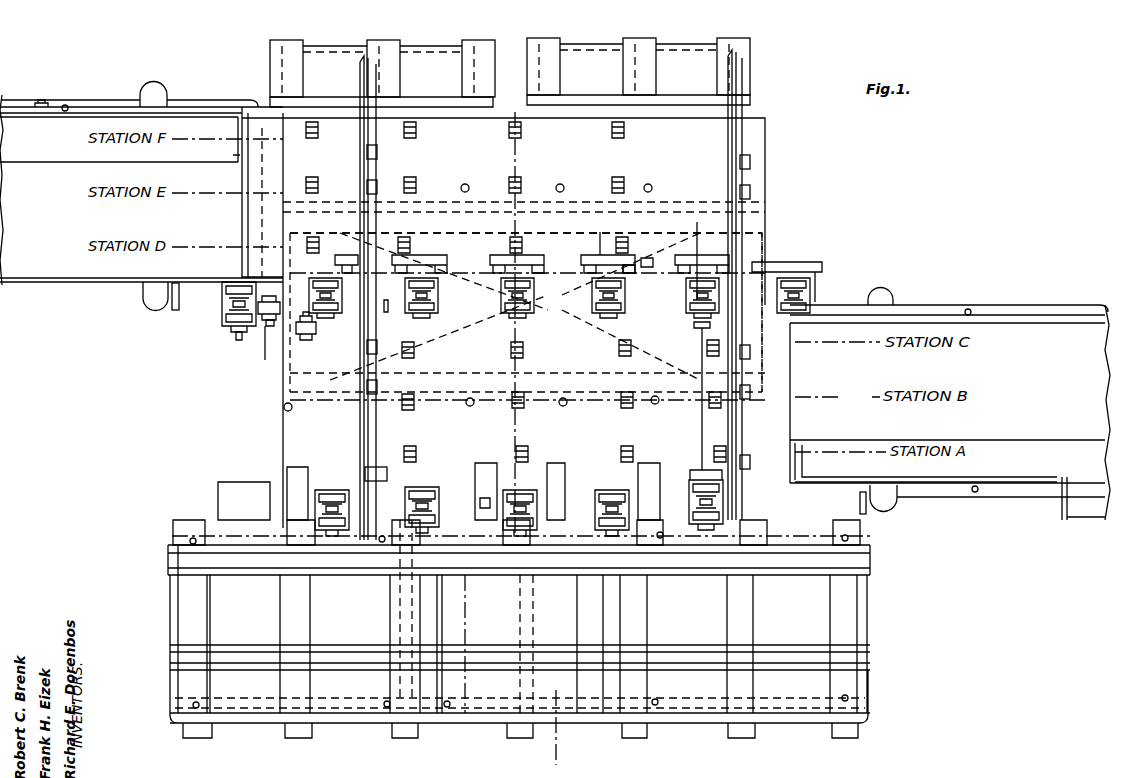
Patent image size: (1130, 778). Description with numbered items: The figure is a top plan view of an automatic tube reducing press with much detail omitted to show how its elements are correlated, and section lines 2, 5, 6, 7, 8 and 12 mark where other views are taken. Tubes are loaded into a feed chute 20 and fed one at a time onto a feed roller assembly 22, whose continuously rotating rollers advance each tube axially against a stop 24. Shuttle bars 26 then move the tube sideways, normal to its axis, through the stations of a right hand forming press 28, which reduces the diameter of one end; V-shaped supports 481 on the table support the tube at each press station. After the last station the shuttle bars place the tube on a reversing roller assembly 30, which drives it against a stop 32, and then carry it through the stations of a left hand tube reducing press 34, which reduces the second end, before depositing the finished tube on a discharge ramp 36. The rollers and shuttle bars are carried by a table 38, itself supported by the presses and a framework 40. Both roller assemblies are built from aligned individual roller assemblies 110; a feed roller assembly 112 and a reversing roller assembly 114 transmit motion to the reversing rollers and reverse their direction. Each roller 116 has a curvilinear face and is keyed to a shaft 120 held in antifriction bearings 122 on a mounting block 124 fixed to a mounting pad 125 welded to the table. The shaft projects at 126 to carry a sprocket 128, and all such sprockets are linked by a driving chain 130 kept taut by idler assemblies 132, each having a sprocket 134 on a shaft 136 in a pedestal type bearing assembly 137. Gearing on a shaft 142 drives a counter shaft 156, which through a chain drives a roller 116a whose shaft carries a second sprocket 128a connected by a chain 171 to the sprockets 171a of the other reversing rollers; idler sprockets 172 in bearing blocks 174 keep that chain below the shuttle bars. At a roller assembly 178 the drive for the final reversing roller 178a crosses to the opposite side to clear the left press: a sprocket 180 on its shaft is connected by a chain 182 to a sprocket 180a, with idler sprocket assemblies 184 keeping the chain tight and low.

The section line 2- 2 is at (560, 480).
The section line 5- 5 is at (700, 232).
The section line 6- 6 is at (847, 380).
The section line 7- 7 is at (387, 276).
The section line 8- 8 is at (380, 350).
The section line 12- 12 is at (512, 140).
The feed chute 20 is at (686, 732).
The feed roller assembly 22 is at (433, 488).
The stop 24 is at (866, 514).
The shuttle bars 26 is at (359, 151).
The right hand forming press 28 is at (1010, 304).
The reversing roller assembly 30 is at (402, 301).
The stop 32 is at (175, 312).
The left hand tube reducing press 34 is at (99, 296).
The discharge ramp 36 is at (750, 60).
The table 38 is at (697, 165).
The framework 40 is at (760, 218).
The roller assembly 110 is at (528, 308).
The feed roller assembly 112 is at (688, 484).
The reversing roller assembly 114 is at (684, 300).
The roller 116 is at (436, 500).
The roller 116a is at (502, 302).
The shaft 120 is at (310, 288).
The antifriction bearings 122 is at (532, 492).
The mounting block 124 is at (446, 494).
The mounting pad 125 is at (546, 502).
The projecting shaft end 126 is at (522, 562).
The sprocket 128 is at (528, 560).
The second sprocket 128a is at (712, 268).
The driving chain 130 is at (372, 560).
The idler assemblies 132 is at (450, 550).
The sprocket 134 is at (466, 556).
The shaft 136 is at (460, 547).
The pedestal type bearing assembly 137 is at (490, 518).
The shaft 142 is at (694, 508).
The counter shaft 156 is at (700, 418).
The chain 171 is at (652, 256).
The sprockets 171a is at (602, 255).
The idler sprockets 172 is at (626, 274).
The bearing blocks 174 is at (488, 255).
The roller assembly 178 is at (310, 283).
The final reversing roller 178a is at (230, 300).
The sprocket 180 is at (306, 340).
The sprocket 180a is at (240, 330).
The chain 182 is at (268, 338).
The idler sprocket assemblies 184 is at (262, 322).
The V-shaped supports 481 is at (438, 408).